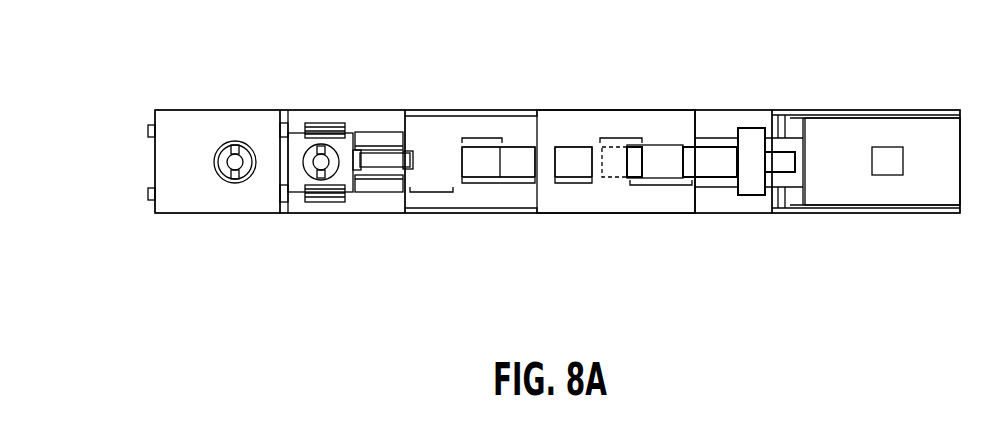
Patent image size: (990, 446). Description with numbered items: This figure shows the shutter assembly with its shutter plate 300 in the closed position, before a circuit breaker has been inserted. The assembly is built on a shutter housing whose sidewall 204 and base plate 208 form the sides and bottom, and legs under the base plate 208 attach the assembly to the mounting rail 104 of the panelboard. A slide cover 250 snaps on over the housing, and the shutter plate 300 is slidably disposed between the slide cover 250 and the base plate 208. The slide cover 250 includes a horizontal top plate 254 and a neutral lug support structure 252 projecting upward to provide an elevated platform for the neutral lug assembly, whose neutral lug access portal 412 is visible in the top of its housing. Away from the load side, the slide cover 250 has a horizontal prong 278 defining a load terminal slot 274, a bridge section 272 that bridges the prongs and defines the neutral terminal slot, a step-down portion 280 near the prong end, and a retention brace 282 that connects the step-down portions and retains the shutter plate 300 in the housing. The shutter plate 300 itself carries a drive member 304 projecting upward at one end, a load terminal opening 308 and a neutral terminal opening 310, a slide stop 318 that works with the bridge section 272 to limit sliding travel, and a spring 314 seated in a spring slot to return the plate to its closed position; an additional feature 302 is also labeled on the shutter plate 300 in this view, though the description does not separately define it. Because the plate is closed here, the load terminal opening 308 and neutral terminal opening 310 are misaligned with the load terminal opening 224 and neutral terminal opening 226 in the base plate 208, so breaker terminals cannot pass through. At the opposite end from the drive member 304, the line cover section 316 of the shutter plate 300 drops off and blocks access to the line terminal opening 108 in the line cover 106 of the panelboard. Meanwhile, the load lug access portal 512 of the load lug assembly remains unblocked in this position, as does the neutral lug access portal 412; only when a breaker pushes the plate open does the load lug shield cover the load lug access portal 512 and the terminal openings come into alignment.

The mounting rail 104 is at (136, 162).
The line cover 106 is at (948, 157).
The line terminal opening 108 is at (892, 149).
The sidewall 204 is at (442, 116).
The base plate 208 is at (488, 158).
The load terminal opening 224 is at (432, 192).
The neutral terminal opening 226 is at (573, 183).
The slide cover 250 is at (571, 143).
The neutral lug support structure 252 is at (297, 205).
The top plate 254 is at (208, 197).
The bridge section 272 is at (622, 208).
The load terminal slot 274 is at (472, 185).
The horizontal prong 278 is at (660, 185).
The step-down portion 280 is at (720, 205).
The retention brace 282 is at (753, 183).
The shutter plate 300 is at (453, 172).
The coupling 302 is at (660, 159).
The drive member 304 is at (377, 160).
The load terminal opening 308 is at (480, 138).
The neutral terminal opening 310 is at (620, 138).
The spring 314 is at (780, 160).
The line cover section 316 is at (878, 157).
The slide stop 318 is at (722, 158).
The neutral lug access portal 412 is at (322, 150).
The load lug access portal 512 is at (234, 150).